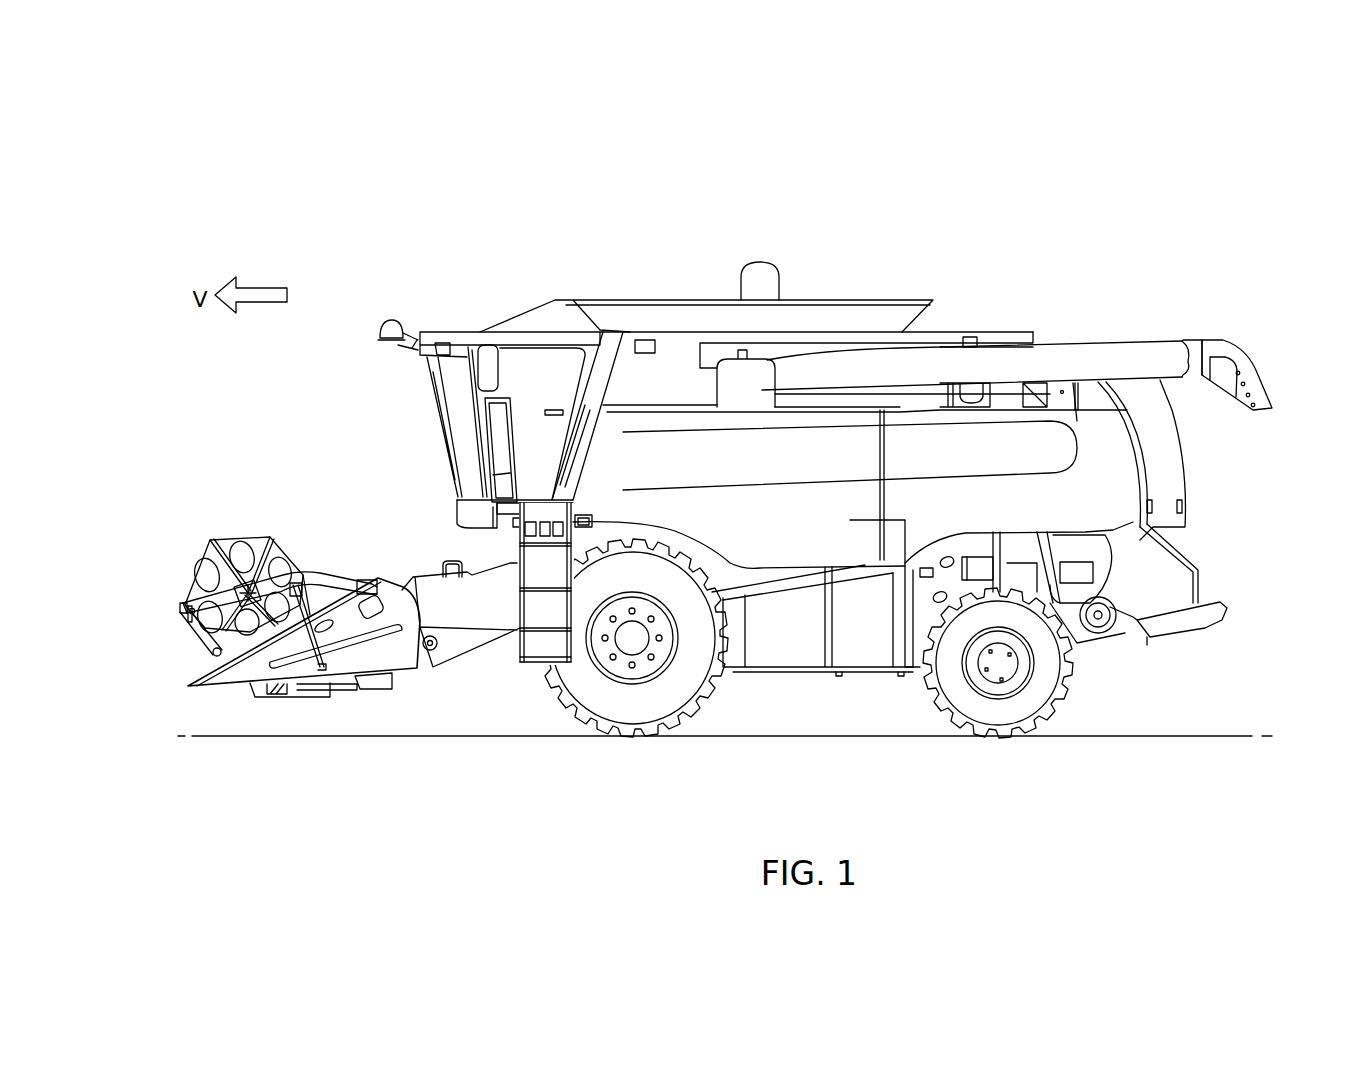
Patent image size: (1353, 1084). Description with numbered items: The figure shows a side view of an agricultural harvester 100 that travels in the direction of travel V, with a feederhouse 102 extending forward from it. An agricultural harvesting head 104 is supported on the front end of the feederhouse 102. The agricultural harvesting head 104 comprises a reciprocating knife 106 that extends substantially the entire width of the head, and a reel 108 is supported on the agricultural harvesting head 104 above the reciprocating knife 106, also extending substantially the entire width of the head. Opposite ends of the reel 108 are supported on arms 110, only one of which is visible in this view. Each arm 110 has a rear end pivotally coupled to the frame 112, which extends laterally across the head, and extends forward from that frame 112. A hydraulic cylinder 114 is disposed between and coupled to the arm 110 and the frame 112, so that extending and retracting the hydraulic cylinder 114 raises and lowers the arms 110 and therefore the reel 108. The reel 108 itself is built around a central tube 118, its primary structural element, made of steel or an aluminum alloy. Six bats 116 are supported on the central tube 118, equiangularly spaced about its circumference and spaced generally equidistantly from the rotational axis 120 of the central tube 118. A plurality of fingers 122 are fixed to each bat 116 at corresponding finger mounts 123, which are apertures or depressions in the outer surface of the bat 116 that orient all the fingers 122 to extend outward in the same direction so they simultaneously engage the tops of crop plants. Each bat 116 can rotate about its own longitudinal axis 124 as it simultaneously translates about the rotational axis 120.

The agricultural harvester 100 is at (736, 185).
The feederhouse 102 is at (467, 660).
The agricultural harvesting head 104 is at (161, 397).
The reciprocating knife 106 is at (267, 703).
The reel 108 is at (280, 540).
The arm 110 is at (333, 574).
The frame 112 is at (370, 702).
The hydraulic cylinder 114 is at (315, 580).
The bat 116 is at (182, 602).
The central tube 118 is at (248, 590).
The rotational axis 120 is at (238, 543).
The finger 122 is at (195, 638).
The finger mount 123 is at (182, 610).
The longitudinal axis 124 is at (180, 614).